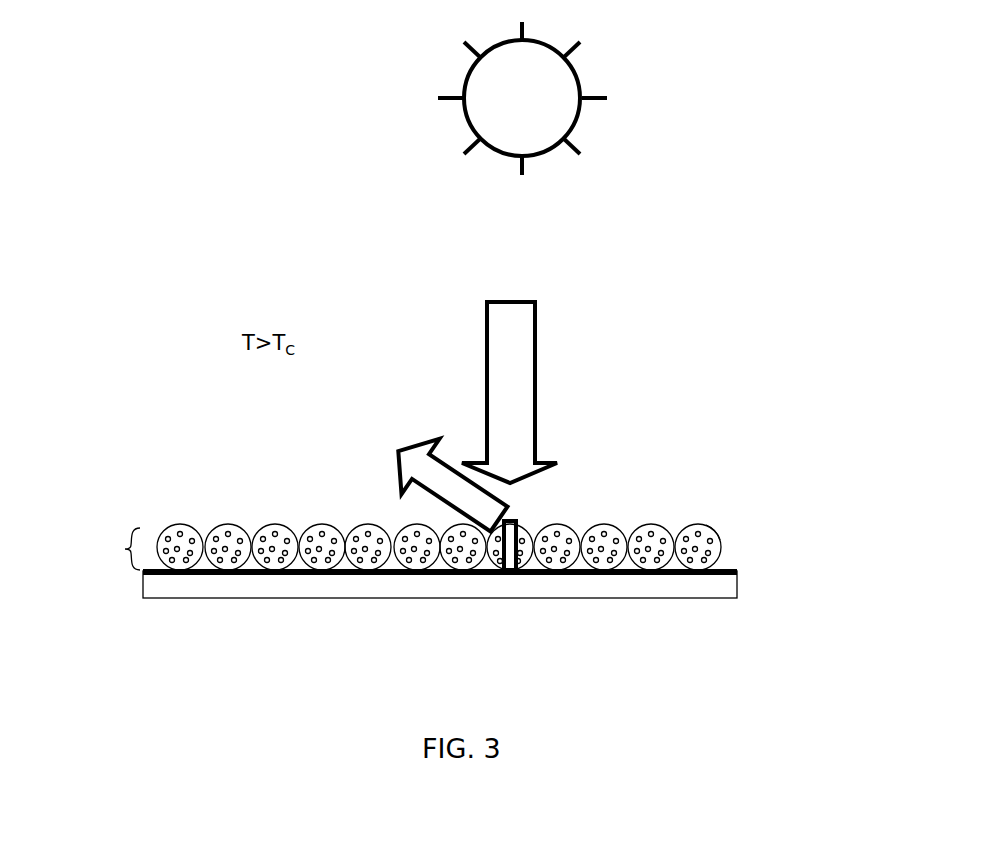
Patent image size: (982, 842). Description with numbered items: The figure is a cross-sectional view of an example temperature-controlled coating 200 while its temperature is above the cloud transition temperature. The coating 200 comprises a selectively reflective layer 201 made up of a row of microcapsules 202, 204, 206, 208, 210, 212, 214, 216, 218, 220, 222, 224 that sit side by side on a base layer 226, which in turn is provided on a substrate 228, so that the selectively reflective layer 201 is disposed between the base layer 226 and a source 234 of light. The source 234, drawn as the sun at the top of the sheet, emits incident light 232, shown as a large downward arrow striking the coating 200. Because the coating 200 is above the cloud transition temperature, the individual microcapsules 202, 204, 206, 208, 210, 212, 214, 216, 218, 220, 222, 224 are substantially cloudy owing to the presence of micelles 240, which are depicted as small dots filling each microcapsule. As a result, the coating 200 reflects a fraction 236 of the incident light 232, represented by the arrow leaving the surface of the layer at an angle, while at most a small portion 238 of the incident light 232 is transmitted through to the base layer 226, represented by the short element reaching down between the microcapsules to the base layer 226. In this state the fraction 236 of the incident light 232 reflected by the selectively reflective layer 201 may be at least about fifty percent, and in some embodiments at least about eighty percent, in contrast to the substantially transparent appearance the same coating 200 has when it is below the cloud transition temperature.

The temperature-controlled coating 200 is at (707, 428).
The selectively reflective layer 201 is at (124, 549).
The microcapsule 202 is at (175, 528).
The microcapsule 204 is at (222, 529).
The microcapsule 206 is at (262, 530).
The microcapsule 208 is at (315, 531).
The microcapsule 210 is at (366, 531).
The microcapsule 212 is at (418, 532).
The microcapsule 214 is at (464, 566).
The microcapsule 216 is at (488, 575).
The microcapsule 218 is at (557, 530).
The microcapsule 220 is at (600, 530).
The microcapsule 222 is at (650, 530).
The microcapsule 224 is at (698, 530).
The base layer 226 is at (151, 562).
The substrate 228 is at (270, 590).
The incident light 232 is at (523, 358).
The source 234 is at (566, 92).
The fraction 236 is at (416, 460).
The portion 238 is at (514, 576).
The micelles 240 is at (716, 530).